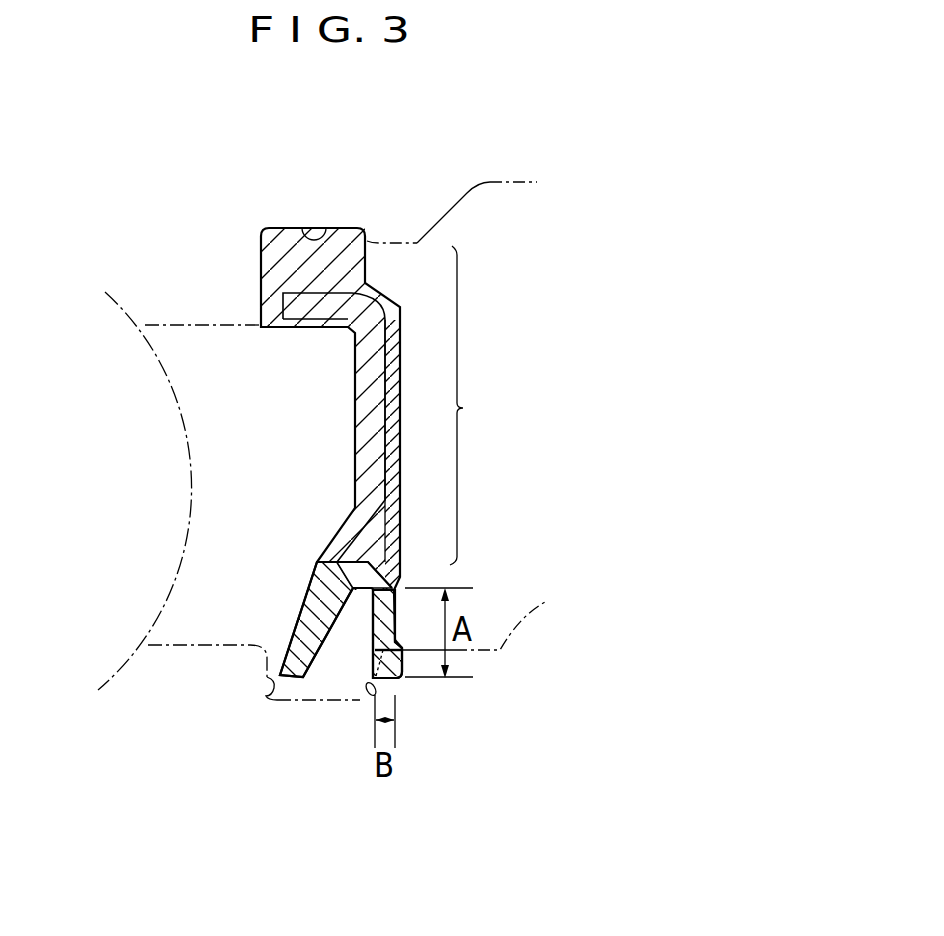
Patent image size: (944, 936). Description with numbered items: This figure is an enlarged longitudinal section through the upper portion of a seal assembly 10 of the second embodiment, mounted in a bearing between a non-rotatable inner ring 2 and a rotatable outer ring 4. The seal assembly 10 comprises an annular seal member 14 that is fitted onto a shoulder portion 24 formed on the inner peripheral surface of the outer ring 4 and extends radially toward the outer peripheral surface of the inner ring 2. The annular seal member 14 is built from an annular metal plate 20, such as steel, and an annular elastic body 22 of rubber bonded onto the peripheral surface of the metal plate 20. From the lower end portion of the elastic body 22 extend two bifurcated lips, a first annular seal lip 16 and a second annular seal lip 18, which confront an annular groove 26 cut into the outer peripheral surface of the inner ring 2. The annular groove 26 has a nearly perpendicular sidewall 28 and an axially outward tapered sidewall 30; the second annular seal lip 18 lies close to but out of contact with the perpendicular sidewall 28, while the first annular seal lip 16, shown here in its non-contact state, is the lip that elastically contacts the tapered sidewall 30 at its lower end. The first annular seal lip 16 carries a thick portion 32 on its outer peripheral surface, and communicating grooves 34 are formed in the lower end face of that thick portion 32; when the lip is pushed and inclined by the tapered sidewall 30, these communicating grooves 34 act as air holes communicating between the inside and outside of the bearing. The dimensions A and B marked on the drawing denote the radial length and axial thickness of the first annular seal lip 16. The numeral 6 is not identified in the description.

The inner ring 2 is at (473, 614).
The outer ring 4 is at (470, 195).
The housing bore wall 6 is at (195, 533).
The seal assembly 10 is at (417, 484).
The annular seal member 14 is at (477, 405).
The first annular seal lip 16 is at (375, 618).
The second annular seal lip 18 is at (300, 622).
The annular metal plate 20 is at (362, 390).
The annular elastic body 22 is at (390, 398).
The shoulder portion 24 is at (328, 222).
The annular groove 26 is at (292, 701).
The perpendicular sidewall 28 is at (262, 704).
The tapered sidewall 30 is at (368, 687).
The thick portion 32 is at (398, 642).
The communicating groove 34 is at (375, 655).